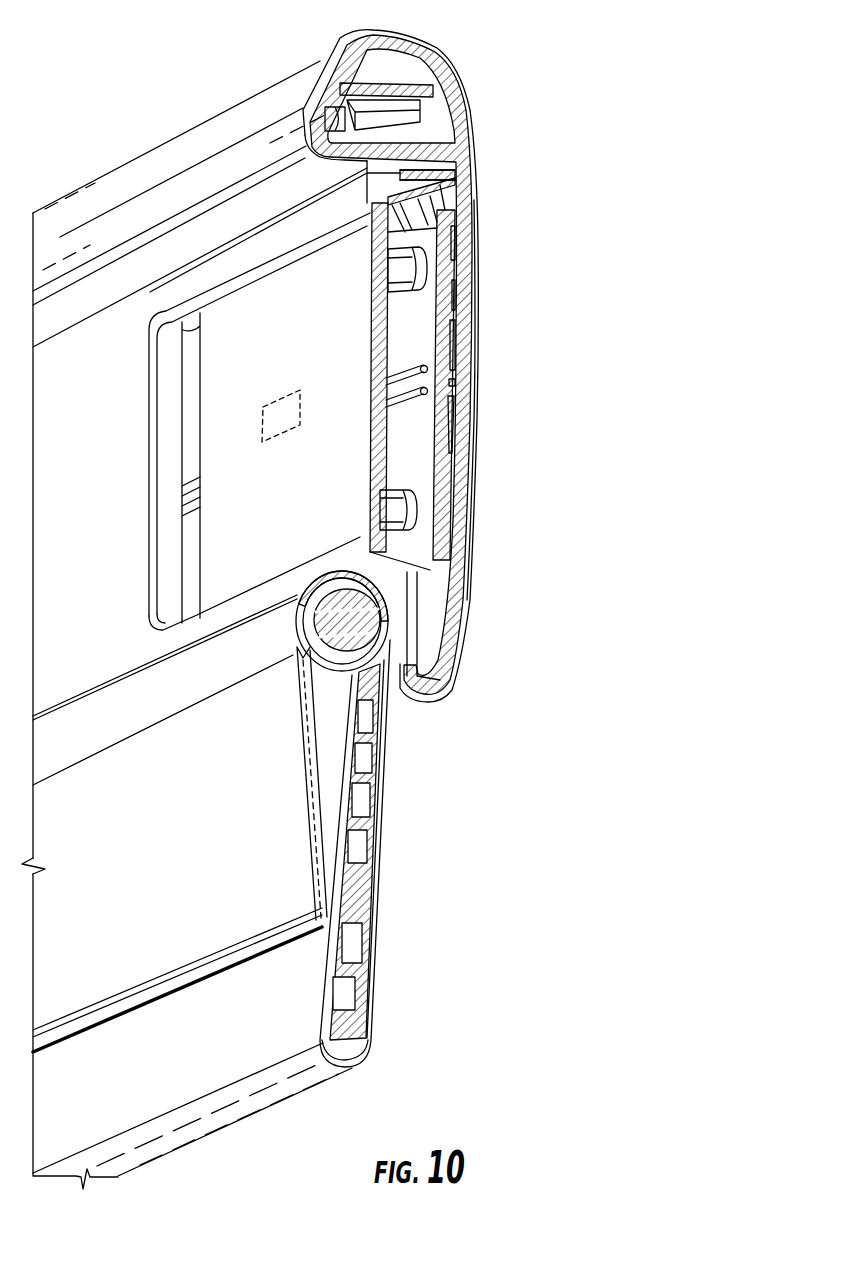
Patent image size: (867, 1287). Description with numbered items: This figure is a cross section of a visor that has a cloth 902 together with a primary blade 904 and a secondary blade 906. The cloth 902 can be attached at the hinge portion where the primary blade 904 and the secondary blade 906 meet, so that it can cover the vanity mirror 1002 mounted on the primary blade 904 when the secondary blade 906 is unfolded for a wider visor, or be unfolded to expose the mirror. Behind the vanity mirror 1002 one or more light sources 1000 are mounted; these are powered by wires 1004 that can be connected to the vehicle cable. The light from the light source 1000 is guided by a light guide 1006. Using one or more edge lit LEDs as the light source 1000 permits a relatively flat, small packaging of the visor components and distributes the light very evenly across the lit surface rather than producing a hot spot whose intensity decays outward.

The cloth 902 is at (273, 890).
The primary blade 904 is at (463, 90).
The secondary blade 906 is at (392, 800).
The light source 1000 is at (297, 392).
The vanity mirror 1002 is at (343, 343).
The wires 1004 is at (403, 407).
The light guide 1006 is at (172, 428).